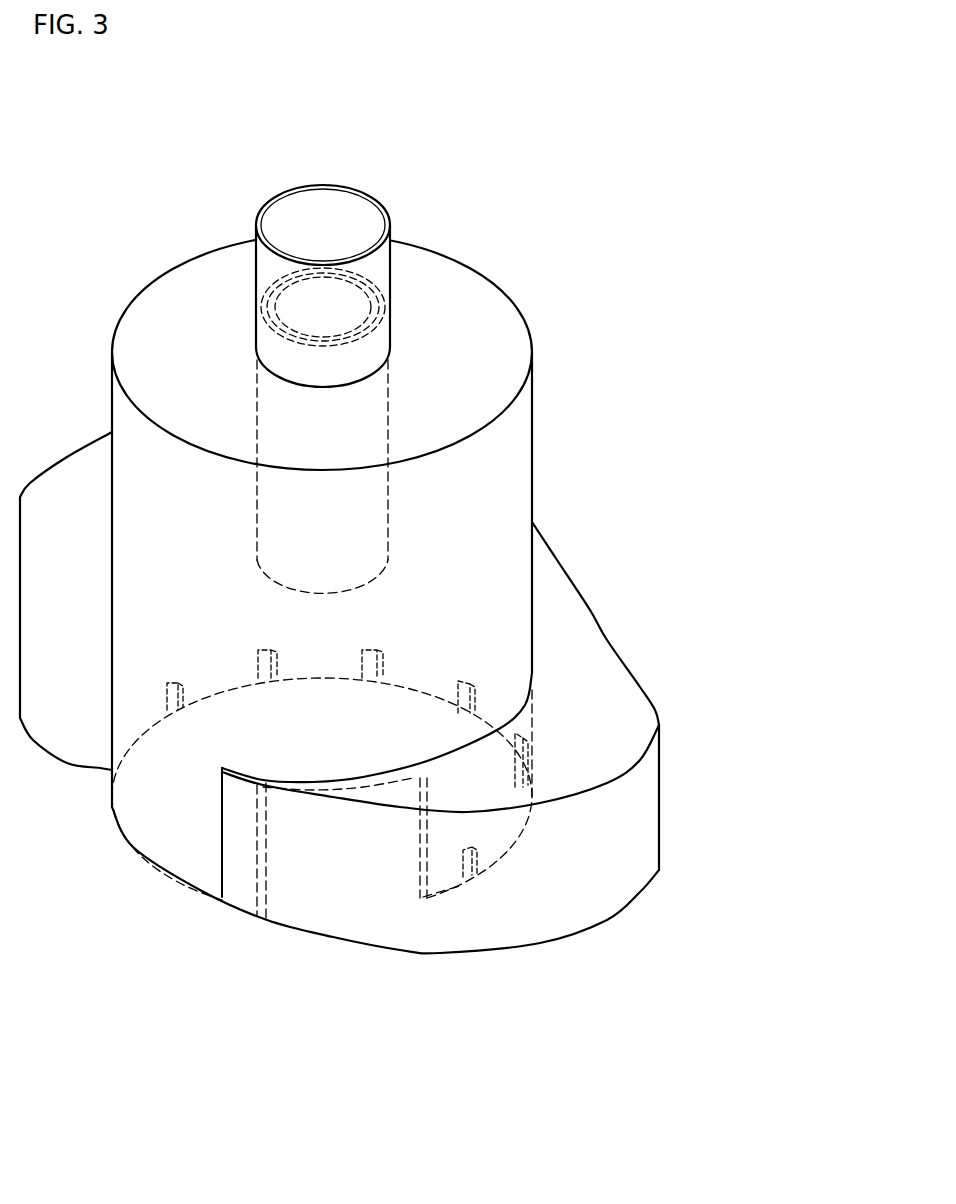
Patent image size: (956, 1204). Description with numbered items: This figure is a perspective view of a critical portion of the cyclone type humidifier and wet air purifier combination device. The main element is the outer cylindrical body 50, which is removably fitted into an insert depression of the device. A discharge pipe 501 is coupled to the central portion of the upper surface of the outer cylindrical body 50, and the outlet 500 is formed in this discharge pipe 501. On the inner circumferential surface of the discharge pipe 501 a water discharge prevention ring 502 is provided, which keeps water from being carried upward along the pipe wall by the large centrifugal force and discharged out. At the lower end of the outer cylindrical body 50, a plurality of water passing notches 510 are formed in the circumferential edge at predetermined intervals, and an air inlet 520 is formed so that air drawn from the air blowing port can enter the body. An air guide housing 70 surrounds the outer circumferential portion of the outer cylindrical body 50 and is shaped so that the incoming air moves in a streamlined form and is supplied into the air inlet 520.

The outer cylindrical body 50 is at (193, 300).
The air guide housing 70 is at (580, 682).
The outlet 500 is at (325, 222).
The discharge pipe 501 is at (378, 267).
The water discharge prevention ring 502 is at (380, 301).
The water passing notches 510 is at (470, 862).
The air inlet 520 is at (322, 862).